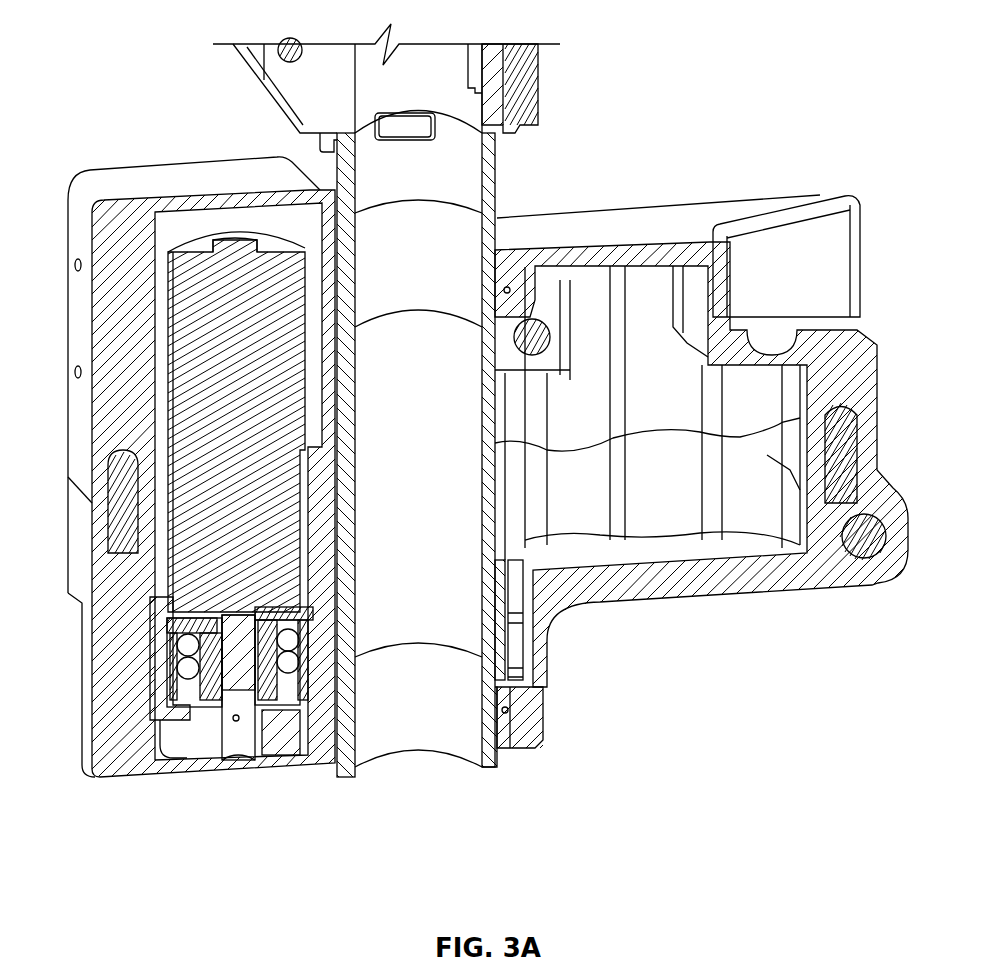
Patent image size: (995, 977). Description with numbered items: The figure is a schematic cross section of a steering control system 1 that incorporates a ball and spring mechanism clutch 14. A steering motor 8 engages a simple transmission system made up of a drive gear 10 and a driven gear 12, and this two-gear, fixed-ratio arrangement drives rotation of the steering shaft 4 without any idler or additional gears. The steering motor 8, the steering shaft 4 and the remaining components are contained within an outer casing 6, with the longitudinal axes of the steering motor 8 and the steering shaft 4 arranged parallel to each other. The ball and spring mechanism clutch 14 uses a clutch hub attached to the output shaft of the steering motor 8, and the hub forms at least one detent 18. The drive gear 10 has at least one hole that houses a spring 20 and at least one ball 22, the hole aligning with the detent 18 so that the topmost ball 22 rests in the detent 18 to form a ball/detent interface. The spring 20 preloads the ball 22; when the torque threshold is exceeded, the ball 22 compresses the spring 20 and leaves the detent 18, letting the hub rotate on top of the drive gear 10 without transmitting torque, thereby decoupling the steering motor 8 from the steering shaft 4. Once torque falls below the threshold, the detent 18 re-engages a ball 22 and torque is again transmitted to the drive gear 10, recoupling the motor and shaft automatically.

The steering control system 1 is at (456, 429).
The steering shaft 4 is at (499, 183).
The outer casing 6 is at (832, 194).
The steering motor 8 is at (193, 367).
The drive gear 10 is at (167, 680).
The driven gear 12 is at (513, 650).
The ball and spring mechanism clutch 14 is at (122, 647).
The detent 18 is at (355, 650).
The spring 20 is at (287, 700).
The ball 22 is at (215, 733).